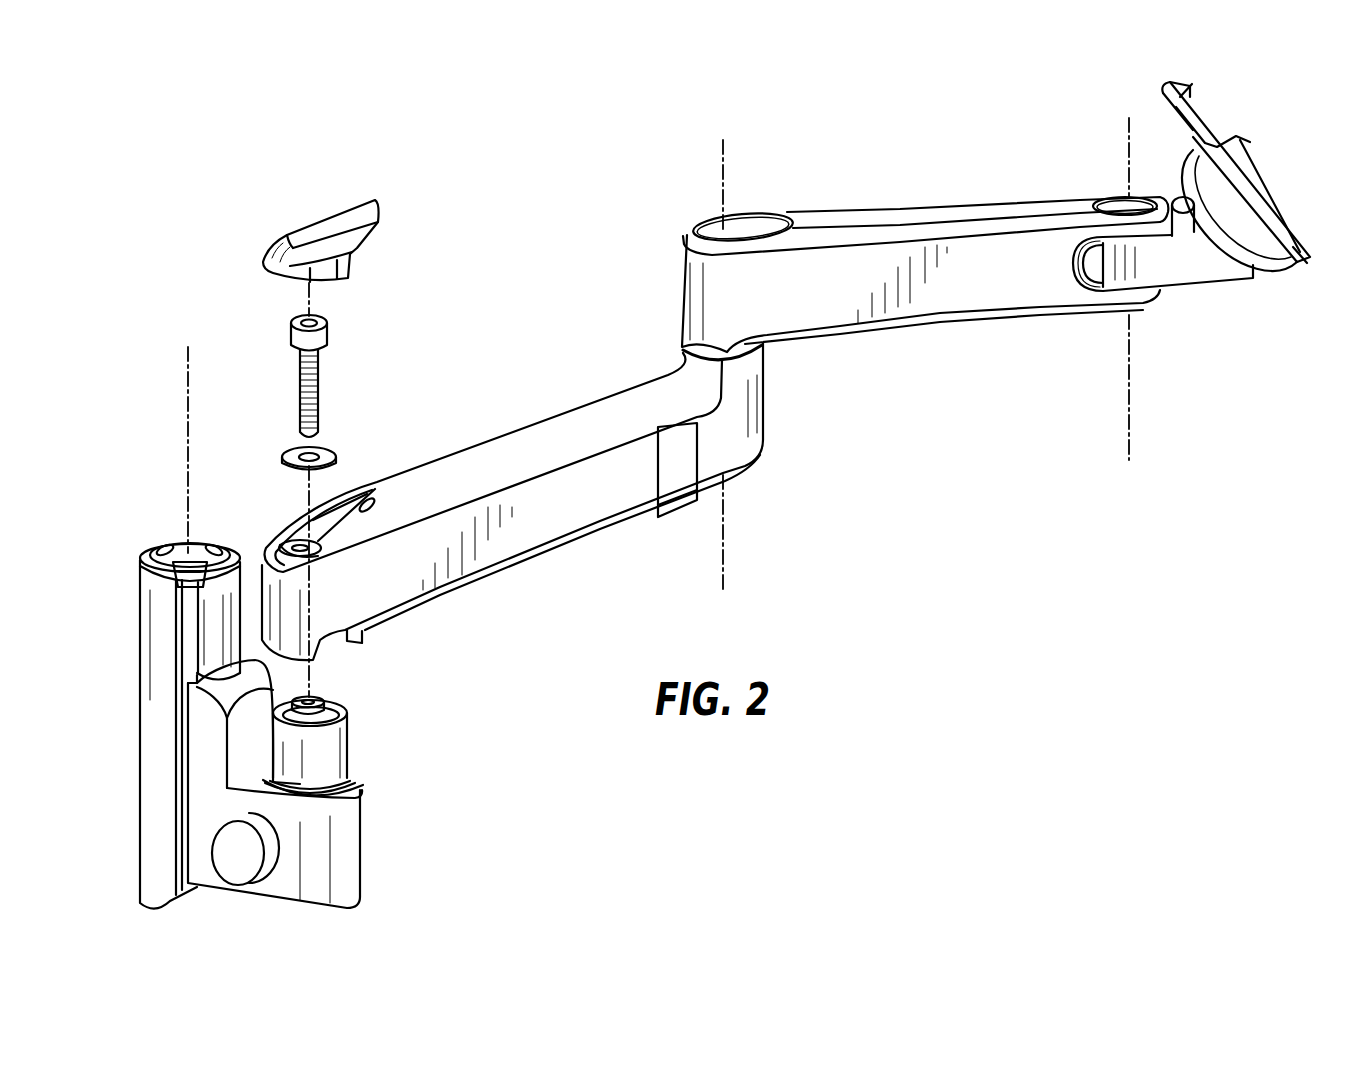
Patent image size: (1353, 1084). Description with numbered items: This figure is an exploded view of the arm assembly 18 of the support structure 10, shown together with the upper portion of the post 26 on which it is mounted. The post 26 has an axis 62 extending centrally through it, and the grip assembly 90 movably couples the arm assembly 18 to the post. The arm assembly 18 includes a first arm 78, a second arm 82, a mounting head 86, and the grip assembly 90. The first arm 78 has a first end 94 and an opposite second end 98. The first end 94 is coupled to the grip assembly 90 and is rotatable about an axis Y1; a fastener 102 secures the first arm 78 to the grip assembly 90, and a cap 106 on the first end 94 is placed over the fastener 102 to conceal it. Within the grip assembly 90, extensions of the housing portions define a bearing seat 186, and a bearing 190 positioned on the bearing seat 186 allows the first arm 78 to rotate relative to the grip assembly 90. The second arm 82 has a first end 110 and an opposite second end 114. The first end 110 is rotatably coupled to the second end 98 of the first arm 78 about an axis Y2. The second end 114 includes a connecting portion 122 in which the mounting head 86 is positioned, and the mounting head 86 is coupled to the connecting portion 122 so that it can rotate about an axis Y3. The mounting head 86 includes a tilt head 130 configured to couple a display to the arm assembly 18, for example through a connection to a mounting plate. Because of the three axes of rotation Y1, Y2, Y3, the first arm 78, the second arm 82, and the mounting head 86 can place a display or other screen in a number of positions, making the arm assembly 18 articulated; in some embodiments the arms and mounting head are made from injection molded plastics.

The monitor support assembly 10 is at (176, 248).
The arm assembly 18 is at (622, 185).
The post 26 is at (152, 640).
The axis 62 is at (187, 423).
The first arm 78 is at (505, 538).
The second arm 82 is at (957, 213).
The mounting head 86 is at (1178, 262).
The grip assembly 90 is at (340, 862).
The first end 94 is at (393, 670).
The second end 98 is at (780, 480).
The fastener 102 is at (318, 352).
The cap 106 is at (330, 225).
The first end 110 is at (745, 200).
The second end 114 is at (1090, 345).
The connecting portion 122 is at (1078, 240).
The tilt head 130 is at (1270, 245).
The bearing seat 186 is at (330, 705).
The bearing 190 is at (328, 765).
The axis Y1 is at (306, 505).
The axis Y2 is at (728, 535).
The axis Y3 is at (1128, 158).